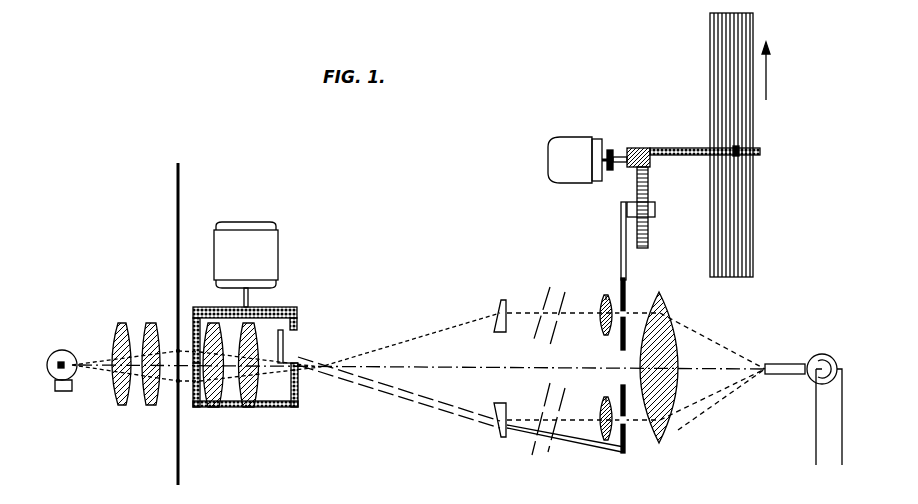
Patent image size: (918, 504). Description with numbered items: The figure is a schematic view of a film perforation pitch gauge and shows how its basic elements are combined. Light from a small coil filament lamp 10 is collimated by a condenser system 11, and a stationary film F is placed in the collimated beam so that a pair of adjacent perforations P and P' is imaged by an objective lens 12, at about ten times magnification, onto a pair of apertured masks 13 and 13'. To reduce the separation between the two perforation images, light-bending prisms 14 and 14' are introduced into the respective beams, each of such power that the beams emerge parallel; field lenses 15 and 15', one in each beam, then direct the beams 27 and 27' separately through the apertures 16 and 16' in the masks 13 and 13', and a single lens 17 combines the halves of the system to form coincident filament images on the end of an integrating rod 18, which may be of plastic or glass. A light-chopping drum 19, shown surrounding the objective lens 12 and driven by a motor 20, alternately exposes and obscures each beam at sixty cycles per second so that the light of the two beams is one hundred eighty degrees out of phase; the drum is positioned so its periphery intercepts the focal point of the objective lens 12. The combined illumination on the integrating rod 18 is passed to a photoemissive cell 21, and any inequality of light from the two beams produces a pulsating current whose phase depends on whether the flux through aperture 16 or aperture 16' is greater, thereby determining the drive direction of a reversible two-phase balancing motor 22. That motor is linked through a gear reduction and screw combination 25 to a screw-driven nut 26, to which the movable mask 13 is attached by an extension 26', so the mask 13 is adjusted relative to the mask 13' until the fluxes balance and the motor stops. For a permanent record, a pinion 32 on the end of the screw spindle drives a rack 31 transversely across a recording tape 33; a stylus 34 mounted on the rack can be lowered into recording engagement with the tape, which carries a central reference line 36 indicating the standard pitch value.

The coil filament lamp 10 is at (62, 350).
The condenser system 11 is at (122, 323).
The objective lens 12 is at (250, 408).
The apertured mask 13 is at (605, 303).
The apertured mask 13' is at (610, 433).
The prism 14 is at (484, 309).
The prism 14' is at (479, 423).
The field lens 15 is at (590, 326).
The field lens 15' is at (593, 417).
The aperture 16 is at (638, 295).
The aperture 16' is at (645, 447).
The single lens 17 is at (672, 312).
The integrating rod 18 is at (780, 374).
The light-chopping drum 19 is at (297, 312).
The motor 20 is at (278, 245).
The photoemissive cell 21 is at (817, 355).
The reversible two-phase motor 22 is at (580, 145).
The gear reduction and screw combination 25 is at (640, 180).
The screw-driven nut 26 is at (660, 205).
The extension 26' is at (600, 241).
The light beam 27 is at (590, 298).
The light beam 27' is at (599, 388).
The rack 31 is at (690, 149).
The pinion 32 is at (640, 148).
The recording tape 33 is at (716, 45).
The stylus 34 is at (737, 147).
The reference line 36 is at (733, 75).
The stationary film F is at (177, 200).
The perforation P is at (165, 326).
The perforation P' is at (159, 415).